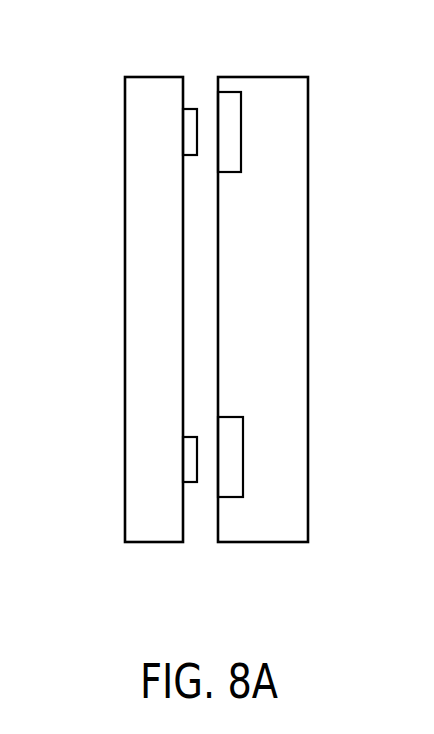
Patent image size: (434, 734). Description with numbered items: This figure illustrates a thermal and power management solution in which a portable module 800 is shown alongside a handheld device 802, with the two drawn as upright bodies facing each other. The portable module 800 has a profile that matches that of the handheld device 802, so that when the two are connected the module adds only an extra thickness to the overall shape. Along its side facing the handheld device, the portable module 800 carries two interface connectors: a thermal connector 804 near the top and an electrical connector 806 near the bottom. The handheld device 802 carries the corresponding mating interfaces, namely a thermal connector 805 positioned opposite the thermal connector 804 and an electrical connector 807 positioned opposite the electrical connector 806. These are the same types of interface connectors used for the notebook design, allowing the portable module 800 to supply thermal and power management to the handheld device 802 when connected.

The portable module 800 is at (173, 536).
The handheld device 802 is at (283, 536).
The thermal connector 804 is at (160, 119).
The thermal connector 805 is at (242, 117).
The electrical connector 806 is at (165, 444).
The electrical connector 807 is at (243, 459).